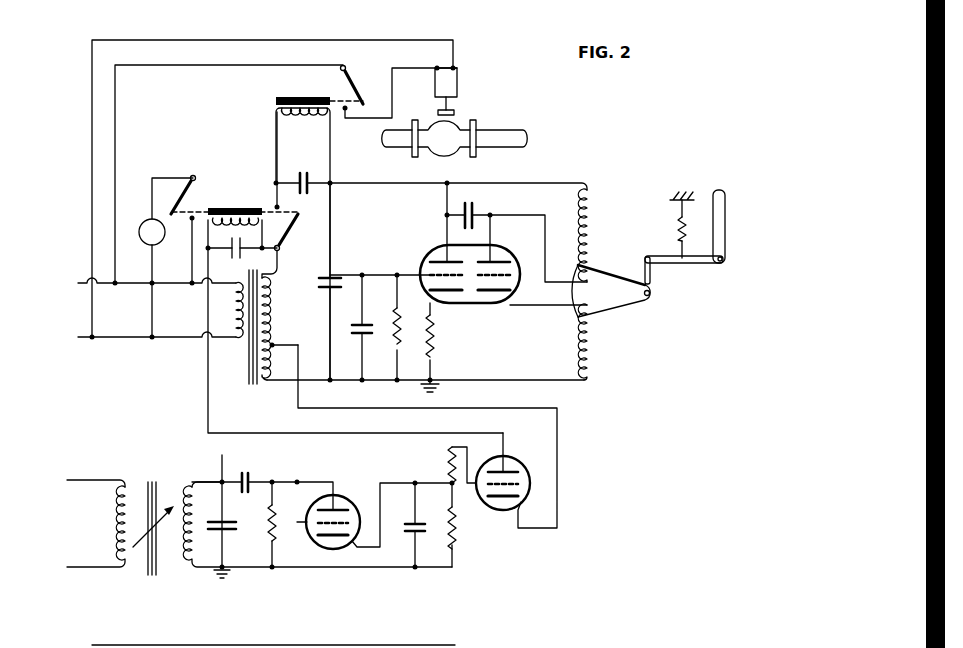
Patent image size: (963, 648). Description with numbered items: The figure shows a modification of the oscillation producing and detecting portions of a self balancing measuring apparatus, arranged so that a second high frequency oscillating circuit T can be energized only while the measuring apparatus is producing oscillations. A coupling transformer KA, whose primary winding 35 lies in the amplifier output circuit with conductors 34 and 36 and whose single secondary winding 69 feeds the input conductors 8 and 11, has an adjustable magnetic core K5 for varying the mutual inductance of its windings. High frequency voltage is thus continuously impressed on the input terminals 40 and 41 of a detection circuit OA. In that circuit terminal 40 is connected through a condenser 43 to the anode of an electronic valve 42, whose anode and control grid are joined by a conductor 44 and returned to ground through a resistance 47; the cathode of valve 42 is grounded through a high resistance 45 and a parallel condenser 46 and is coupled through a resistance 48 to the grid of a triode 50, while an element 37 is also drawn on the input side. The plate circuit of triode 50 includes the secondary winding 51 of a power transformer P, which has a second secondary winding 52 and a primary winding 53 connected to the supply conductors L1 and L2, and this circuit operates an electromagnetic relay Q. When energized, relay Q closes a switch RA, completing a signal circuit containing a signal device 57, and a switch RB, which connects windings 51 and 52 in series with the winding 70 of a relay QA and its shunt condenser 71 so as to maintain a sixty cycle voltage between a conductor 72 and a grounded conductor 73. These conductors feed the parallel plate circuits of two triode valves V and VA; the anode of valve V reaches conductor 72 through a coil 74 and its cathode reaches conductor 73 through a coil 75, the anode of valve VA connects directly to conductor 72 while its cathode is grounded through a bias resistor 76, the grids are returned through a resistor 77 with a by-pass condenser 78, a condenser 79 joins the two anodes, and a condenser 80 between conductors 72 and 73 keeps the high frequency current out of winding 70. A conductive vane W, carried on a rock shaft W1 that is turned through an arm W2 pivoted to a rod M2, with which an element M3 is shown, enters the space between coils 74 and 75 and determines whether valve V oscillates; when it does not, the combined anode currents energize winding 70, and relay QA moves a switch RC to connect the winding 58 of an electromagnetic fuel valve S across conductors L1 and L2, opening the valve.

The supply conductor L1 is at (76, 336).
The supply conductor L2 is at (78, 283).
The signal device 57 is at (163, 245).
The switch RA is at (186, 195).
The switch RB is at (289, 236).
The switch RC is at (350, 75).
The electromagnetic relay Q is at (240, 196).
The electromagnetic relay QA is at (271, 106).
The winding 70 is at (294, 120).
The condenser 71 is at (301, 172).
The winding 58 is at (458, 86).
The electromagnetic fuel valve S is at (446, 155).
The primary winding 53 is at (240, 313).
The power transformer P is at (258, 386).
The secondary winding 51 is at (275, 309).
The secondary winding 52 is at (273, 363).
The condenser 80 is at (336, 276).
The by-pass condenser 78 is at (370, 318).
The resistor 77 is at (402, 316).
The bias resistor 76 is at (434, 343).
The conductor 73 is at (457, 380).
The triode valve VA is at (434, 247).
The triode valve V is at (502, 250).
The condenser 79 is at (472, 205).
The conductor 72 is at (510, 183).
The coil 74 is at (579, 214).
The coil 75 is at (578, 340).
The high frequency oscillating circuit T is at (533, 354).
The vane W is at (609, 314).
The rock shaft W1 is at (651, 279).
The arm W2 is at (657, 255).
The rod M2 is at (725, 221).
The spring M3 is at (677, 222).
The coupling transformer KA is at (156, 474).
The magnetic core K5 is at (149, 576).
The secondary winding 69 is at (110, 525).
The conductor 11 is at (87, 480).
The conductor 8 is at (80, 567).
The primary winding 35 is at (217, 512).
The conductor 34 is at (220, 470).
The conductor 36 is at (194, 573).
The capacitor 37 is at (234, 521).
The input terminal 40 is at (231, 472).
The condenser 43 is at (262, 480).
The input terminal 41 is at (252, 568).
The resistance 47 is at (269, 524).
The conductor 44 is at (297, 522).
The electronic valve 42 is at (339, 498).
The condenser 46 is at (422, 515).
The high resistance 45 is at (458, 535).
The resistance 48 is at (447, 469).
The triode 50 is at (510, 461).
The detection circuit OA is at (366, 573).